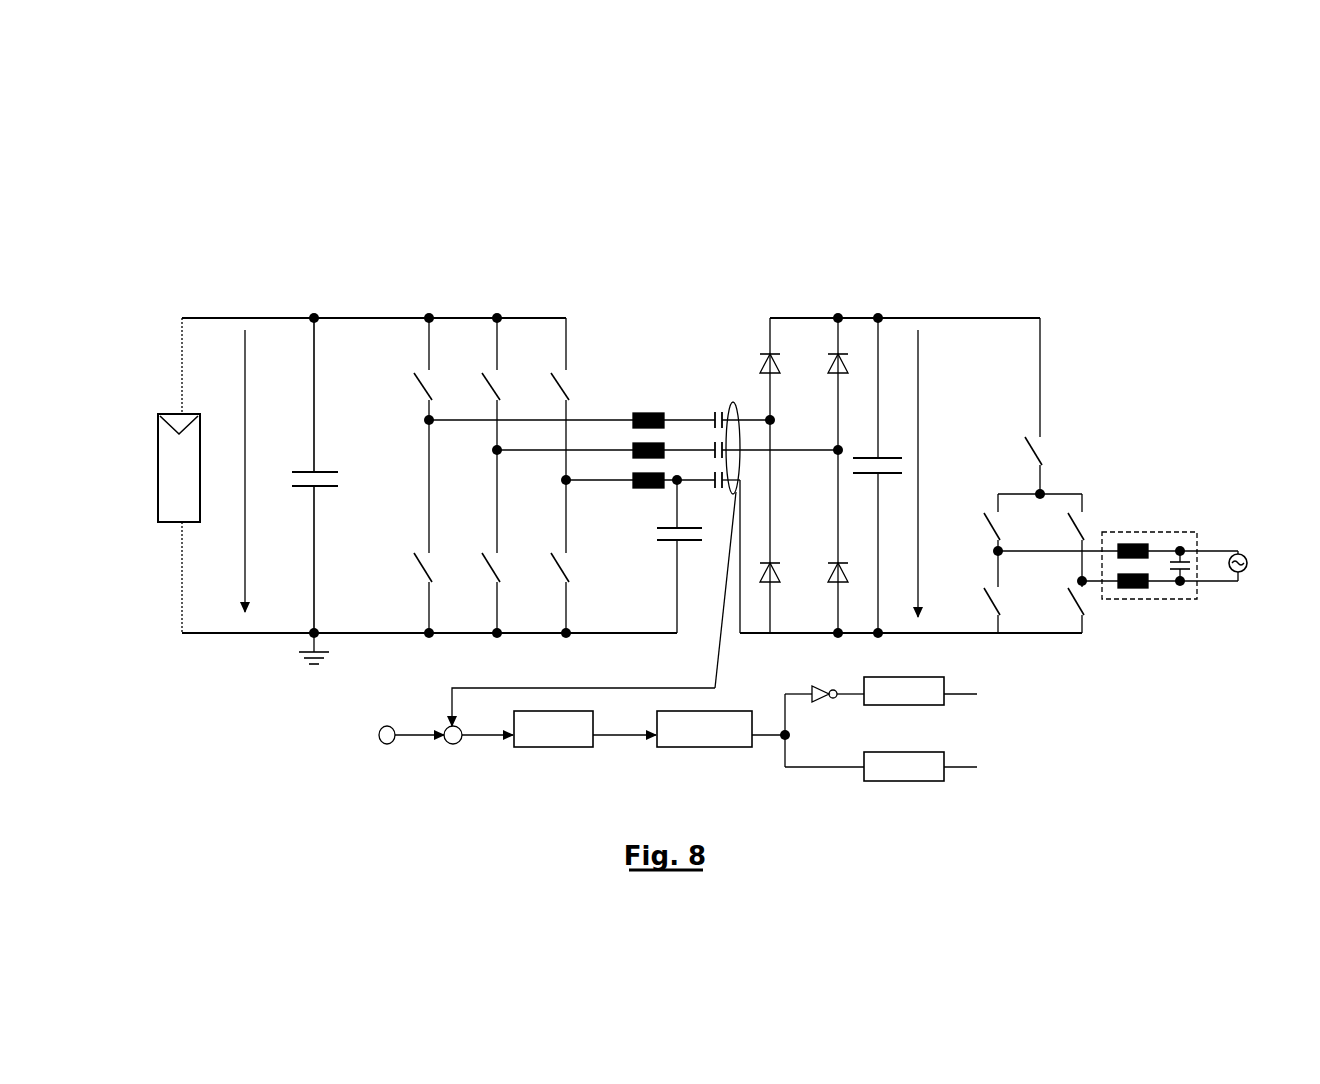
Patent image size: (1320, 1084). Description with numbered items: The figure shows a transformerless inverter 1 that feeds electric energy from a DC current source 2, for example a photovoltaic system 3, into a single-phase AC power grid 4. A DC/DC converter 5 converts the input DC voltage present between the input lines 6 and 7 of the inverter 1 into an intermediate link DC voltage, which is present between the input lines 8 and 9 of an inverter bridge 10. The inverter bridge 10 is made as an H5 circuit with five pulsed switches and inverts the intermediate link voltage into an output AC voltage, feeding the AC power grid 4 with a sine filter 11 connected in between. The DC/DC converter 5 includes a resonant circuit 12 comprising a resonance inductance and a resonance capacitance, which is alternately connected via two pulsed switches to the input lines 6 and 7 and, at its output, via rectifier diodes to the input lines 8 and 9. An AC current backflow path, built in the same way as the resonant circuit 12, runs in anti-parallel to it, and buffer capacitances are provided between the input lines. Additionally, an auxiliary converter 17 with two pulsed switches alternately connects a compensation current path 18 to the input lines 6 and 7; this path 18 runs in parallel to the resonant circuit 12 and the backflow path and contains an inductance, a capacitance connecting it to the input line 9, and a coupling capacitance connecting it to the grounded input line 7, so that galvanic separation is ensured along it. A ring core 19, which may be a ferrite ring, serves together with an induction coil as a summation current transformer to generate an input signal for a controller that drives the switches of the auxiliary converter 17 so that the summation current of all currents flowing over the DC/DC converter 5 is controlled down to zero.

The transformerless inverter 1 is at (843, 282).
The DC current source 2 is at (146, 438).
The photovoltaic system 3 is at (156, 488).
The AC power grid 4 is at (1247, 556).
The DC/DC converter 5 is at (627, 292).
The input line 6 is at (282, 318).
The input line 7 is at (275, 636).
The input line of the inverter bridge 8 is at (918, 318).
The input line of the inverter bridge 9 is at (933, 633).
The inverter bridge 10 is at (1077, 440).
The sine filter 11 is at (1155, 517).
The resonant circuit 12 is at (641, 400).
The auxiliary converter 17 is at (567, 306).
The compensation current path 18 is at (645, 463).
The ring core 19 is at (730, 402).